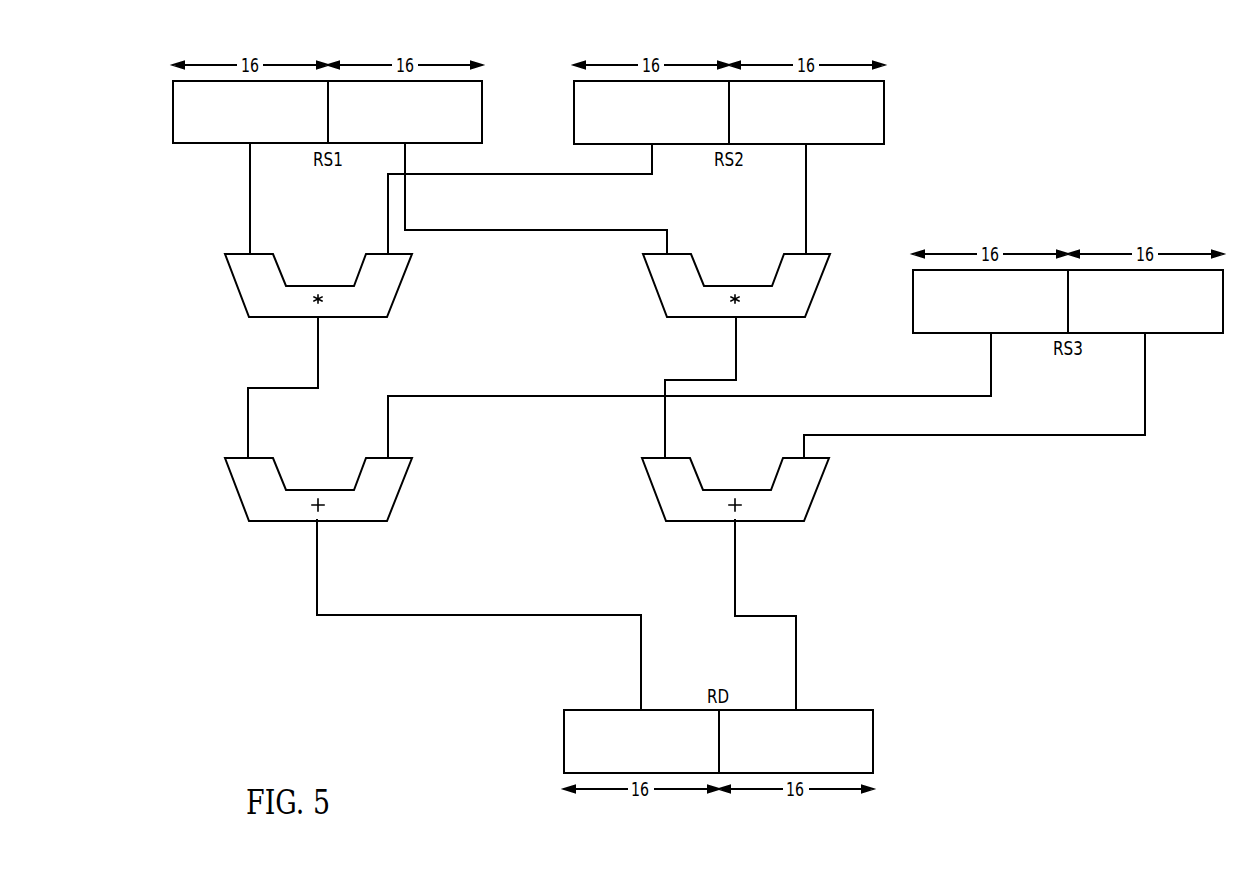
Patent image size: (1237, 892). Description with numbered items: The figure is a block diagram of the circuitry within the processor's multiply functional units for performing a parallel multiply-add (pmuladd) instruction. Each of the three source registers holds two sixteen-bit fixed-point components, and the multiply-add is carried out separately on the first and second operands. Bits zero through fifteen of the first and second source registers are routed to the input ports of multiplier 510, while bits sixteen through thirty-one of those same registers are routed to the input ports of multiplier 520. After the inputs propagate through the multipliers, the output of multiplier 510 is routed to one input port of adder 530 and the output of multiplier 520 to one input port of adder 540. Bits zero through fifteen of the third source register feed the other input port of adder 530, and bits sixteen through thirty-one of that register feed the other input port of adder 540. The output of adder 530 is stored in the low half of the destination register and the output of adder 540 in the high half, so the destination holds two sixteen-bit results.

The multiplier 510 is at (377, 318).
The multiplier 520 is at (795, 318).
The adder 530 is at (376, 521).
The adder 540 is at (795, 521).